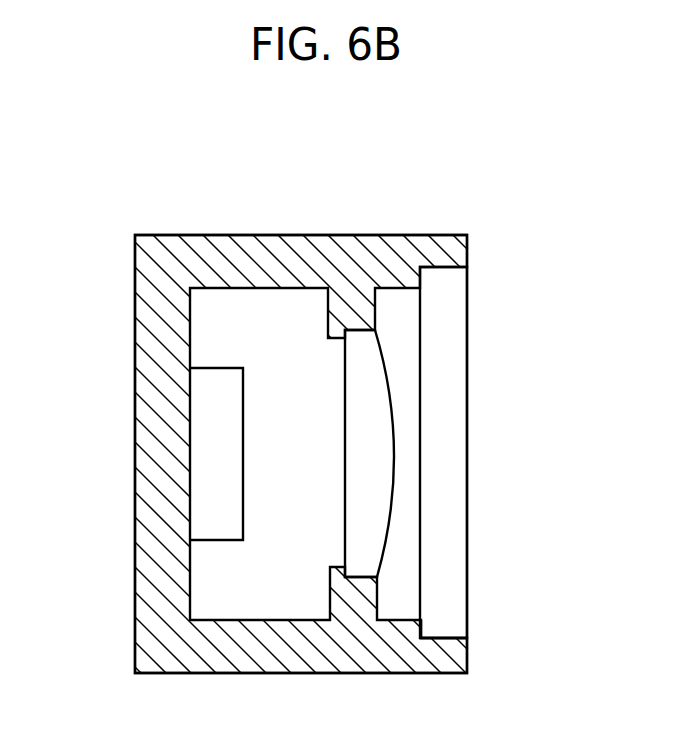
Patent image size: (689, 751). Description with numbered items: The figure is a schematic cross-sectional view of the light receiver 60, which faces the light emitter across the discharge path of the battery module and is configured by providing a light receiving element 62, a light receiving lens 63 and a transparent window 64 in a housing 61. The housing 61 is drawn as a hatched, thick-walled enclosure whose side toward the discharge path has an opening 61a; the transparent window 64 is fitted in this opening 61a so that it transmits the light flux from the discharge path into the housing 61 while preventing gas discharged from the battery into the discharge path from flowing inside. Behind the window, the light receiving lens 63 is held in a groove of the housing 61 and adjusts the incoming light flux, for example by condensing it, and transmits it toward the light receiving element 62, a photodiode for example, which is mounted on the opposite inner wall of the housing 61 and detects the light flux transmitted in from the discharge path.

The light receiver 60 is at (260, 225).
The housing 61 is at (138, 337).
The opening 61a is at (458, 637).
The light receiving element 62 is at (202, 440).
The light receiving lens 63 is at (358, 347).
The transparent window 64 is at (455, 392).